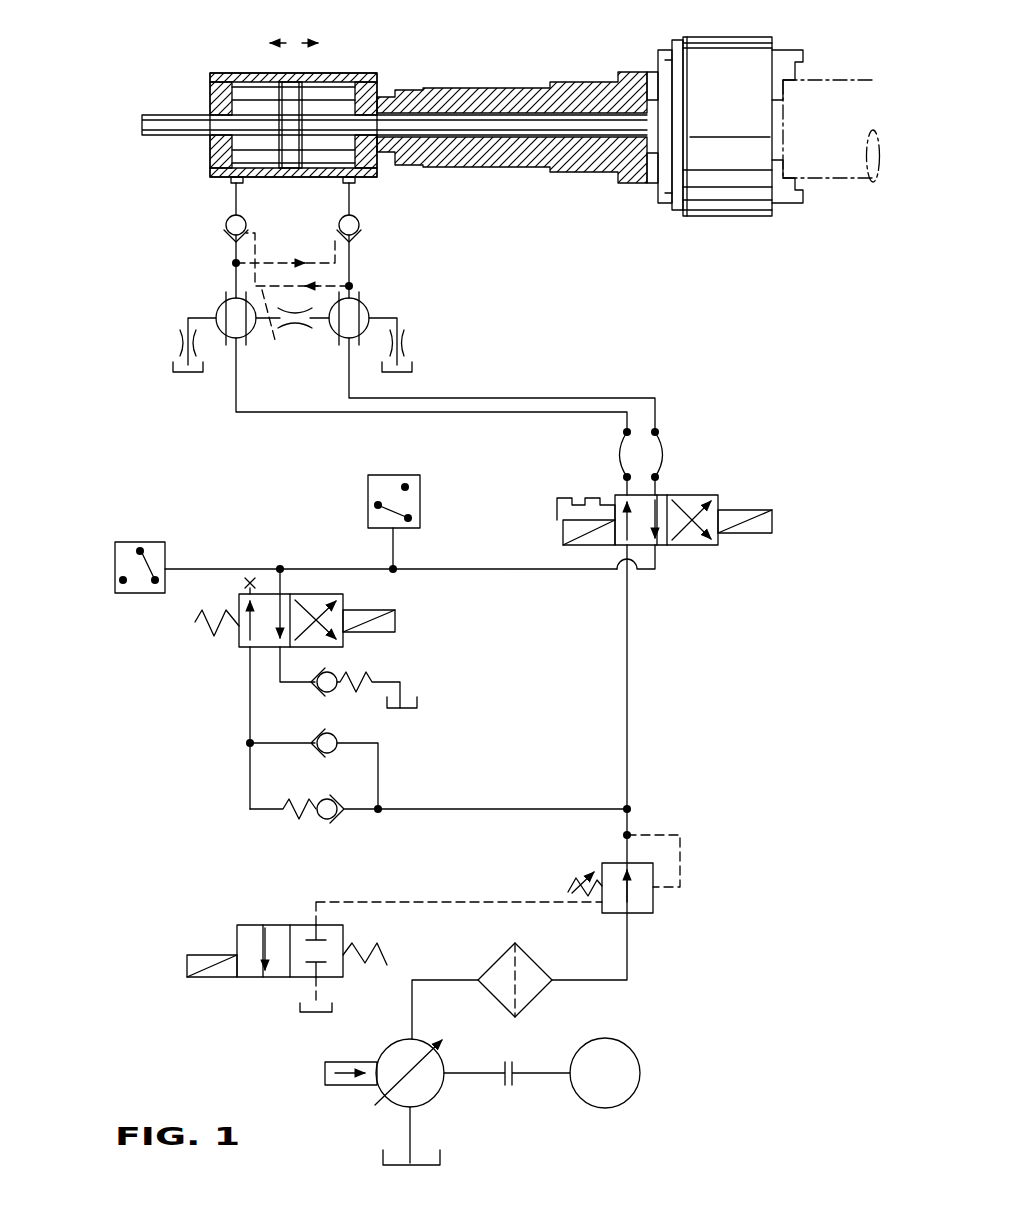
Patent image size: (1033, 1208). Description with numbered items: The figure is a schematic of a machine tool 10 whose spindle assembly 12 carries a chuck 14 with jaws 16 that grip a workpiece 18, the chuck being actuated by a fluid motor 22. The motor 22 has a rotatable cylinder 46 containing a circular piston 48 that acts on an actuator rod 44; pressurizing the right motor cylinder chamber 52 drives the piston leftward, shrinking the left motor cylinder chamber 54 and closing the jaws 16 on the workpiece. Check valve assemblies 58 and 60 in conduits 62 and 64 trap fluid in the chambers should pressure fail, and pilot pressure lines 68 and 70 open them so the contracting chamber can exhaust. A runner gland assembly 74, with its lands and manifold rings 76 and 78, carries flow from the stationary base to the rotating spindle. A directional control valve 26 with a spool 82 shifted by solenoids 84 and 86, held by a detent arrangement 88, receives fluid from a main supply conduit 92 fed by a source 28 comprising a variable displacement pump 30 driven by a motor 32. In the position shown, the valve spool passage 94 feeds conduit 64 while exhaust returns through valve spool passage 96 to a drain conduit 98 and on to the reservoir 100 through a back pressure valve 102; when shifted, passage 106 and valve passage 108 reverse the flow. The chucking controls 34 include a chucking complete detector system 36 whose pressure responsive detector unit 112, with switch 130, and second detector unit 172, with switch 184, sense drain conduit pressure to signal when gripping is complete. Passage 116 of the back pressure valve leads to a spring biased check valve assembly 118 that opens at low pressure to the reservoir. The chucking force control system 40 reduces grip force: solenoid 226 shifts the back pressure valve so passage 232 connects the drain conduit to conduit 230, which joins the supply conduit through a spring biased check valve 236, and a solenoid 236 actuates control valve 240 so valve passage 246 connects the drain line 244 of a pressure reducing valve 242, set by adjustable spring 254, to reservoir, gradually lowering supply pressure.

The machine tool 10 is at (163, 63).
The spindle assembly 12 is at (425, 58).
The chuck 14 is at (702, 32).
The jaws 16 is at (782, 60).
The workpiece 18 is at (817, 100).
The fluid motor 22 is at (340, 58).
The directional control valve 26 is at (775, 503).
The source of fluid under pressure 28 is at (618, 1012).
The variable displacement pump 30 is at (393, 1055).
The motor 32 is at (620, 1052).
The chucking controls 34 is at (178, 483).
The chucking complete detector system 36 is at (172, 505).
The chucking force control system 40 is at (246, 815).
The actuator rod 44 is at (432, 88).
The rotatable cylinder 46 is at (233, 72).
The piston 48 is at (288, 105).
The right motor cylinder chamber 52 is at (330, 150).
The left motor cylinder chamber 54 is at (247, 152).
The check valve assembly 58 is at (372, 223).
The check valve assembly 60 is at (218, 232).
The conduit 62 is at (352, 276).
The conduit 64 is at (235, 277).
The pilot pressure line 68 is at (292, 336).
The pilot pressure line 70 is at (268, 258).
The runner gland assembly 74 is at (168, 327).
The annular lands and manifold rings 76 is at (345, 340).
The annular lands and manifold rings 78 is at (243, 340).
The spool 82 is at (720, 500).
The solenoid 84 is at (745, 535).
The solenoid 86 is at (563, 532).
The detent arrangement 88 is at (565, 498).
The main supply conduit 92 is at (630, 662).
The valve spool passage 94 is at (622, 530).
The valve spool passage 96 is at (650, 507).
The drain conduit 98 is at (437, 573).
The reservoir 100 is at (172, 367).
The back pressure valve 102 is at (412, 622).
The passage 106 is at (681, 548).
The valve passage 108 is at (713, 540).
The pressure responsive detector unit 112 is at (130, 596).
The passage 116 is at (283, 603).
The spring biased check valve assembly 118 is at (318, 694).
The switch 130 is at (160, 548).
The second detector unit 172 is at (364, 503).
The switch 184 is at (415, 502).
The solenoid 226 is at (358, 635).
The conduit 230 is at (250, 700).
The passage 232 is at (282, 658).
The spring biased check valve / solenoid 236 is at (323, 820).
The control valve 240 is at (218, 932).
The pressure reducing valve 242 is at (638, 905).
The drain line 244 is at (363, 900).
The valve passage 246 is at (266, 932).
The adjustable spring 254 is at (573, 880).